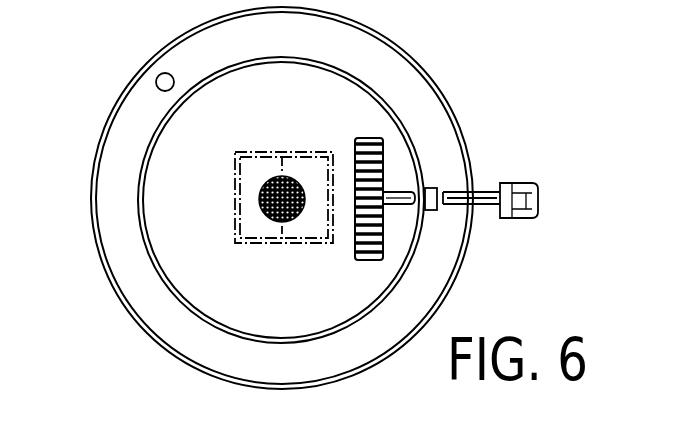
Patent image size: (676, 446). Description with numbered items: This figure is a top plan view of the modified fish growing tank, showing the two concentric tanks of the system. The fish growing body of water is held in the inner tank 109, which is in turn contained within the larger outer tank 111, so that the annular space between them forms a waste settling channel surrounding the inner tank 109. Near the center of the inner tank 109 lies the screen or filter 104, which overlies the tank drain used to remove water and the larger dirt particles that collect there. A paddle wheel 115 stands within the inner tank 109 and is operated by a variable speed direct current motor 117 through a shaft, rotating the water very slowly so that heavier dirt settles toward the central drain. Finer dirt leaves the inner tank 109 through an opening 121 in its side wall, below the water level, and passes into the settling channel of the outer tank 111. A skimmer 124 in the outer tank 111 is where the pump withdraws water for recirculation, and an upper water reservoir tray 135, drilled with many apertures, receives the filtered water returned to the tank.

The screen or filter 104 is at (266, 178).
The inner tank 109 is at (322, 63).
The outer tank 111 is at (440, 85).
The paddle wheel 115 is at (386, 176).
The variable speed direct current motor 117 is at (525, 218).
The opening 121 is at (432, 187).
The skimmer 124 is at (158, 81).
The upper water reservoir tray 135 is at (240, 175).